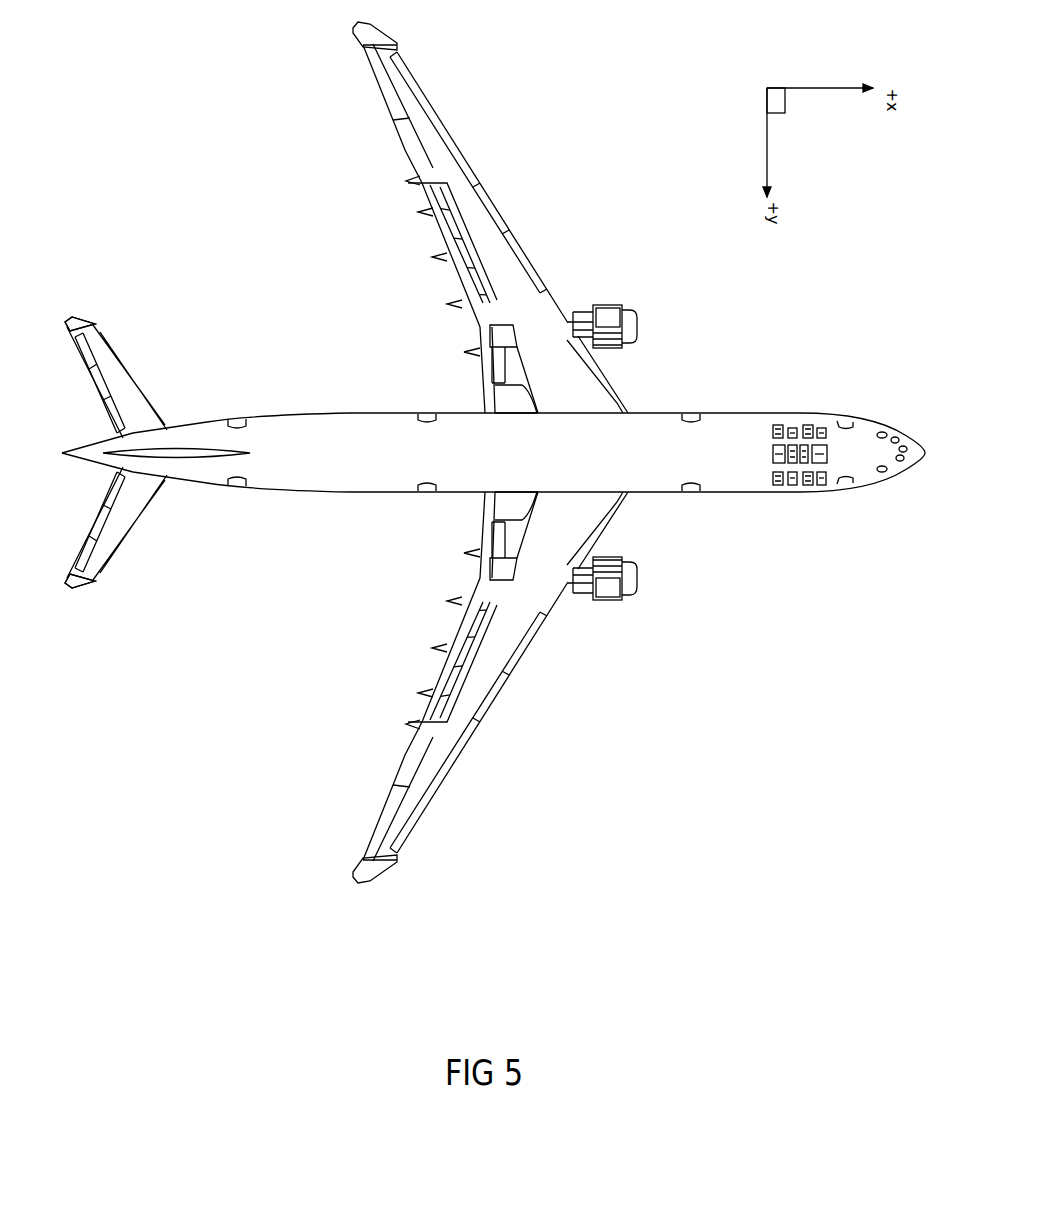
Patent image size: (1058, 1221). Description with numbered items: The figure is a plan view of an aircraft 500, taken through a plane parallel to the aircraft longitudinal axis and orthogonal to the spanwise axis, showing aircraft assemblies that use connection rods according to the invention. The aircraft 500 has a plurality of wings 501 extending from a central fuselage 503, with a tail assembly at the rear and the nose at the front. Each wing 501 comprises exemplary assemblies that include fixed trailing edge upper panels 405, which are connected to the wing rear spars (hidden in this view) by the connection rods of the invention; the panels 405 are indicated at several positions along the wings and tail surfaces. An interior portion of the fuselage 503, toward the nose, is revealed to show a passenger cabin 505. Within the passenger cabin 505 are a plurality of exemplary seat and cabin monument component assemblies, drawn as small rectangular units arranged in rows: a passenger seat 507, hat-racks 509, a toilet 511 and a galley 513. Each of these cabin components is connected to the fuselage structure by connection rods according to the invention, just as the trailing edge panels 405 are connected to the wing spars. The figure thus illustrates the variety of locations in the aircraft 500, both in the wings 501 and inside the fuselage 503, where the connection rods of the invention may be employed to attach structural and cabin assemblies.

The aircraft 500 is at (506, 452).
The fuselage 503 is at (620, 450).
The fixed trailing edge upper panels 405 is at (500, 330).
The wings 501 is at (445, 148).
The passenger cabin 505 is at (798, 432).
The passenger seat 507 is at (813, 428).
The hat-racks 509 is at (822, 463).
The toilet 511 is at (782, 462).
The galley 513 is at (778, 460).